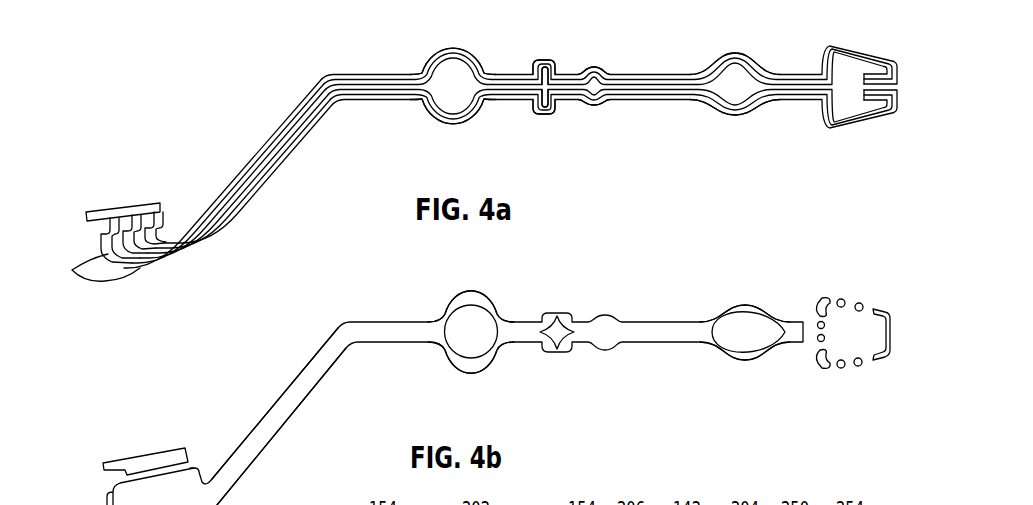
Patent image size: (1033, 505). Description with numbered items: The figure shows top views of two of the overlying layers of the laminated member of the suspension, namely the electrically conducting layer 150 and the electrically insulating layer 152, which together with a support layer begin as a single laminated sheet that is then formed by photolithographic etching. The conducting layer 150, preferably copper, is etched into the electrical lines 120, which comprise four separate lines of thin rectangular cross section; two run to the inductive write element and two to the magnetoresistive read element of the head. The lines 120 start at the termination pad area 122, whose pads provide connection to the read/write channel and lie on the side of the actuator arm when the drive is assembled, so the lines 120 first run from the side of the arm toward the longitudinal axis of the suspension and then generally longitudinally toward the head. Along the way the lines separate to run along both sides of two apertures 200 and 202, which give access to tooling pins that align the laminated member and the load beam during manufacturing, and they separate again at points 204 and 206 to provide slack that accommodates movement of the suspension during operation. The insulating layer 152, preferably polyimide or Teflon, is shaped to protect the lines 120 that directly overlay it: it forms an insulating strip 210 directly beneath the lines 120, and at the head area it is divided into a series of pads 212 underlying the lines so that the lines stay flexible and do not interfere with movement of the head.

In FIG. 4A, the electrical lines 120 is at (570, 73).
In FIG. 4A, the termination pad area 122 is at (87, 268).
In FIG. 4A, the electrically conducting layer 150 is at (652, 73).
In FIG. 4B, the electrically insulating layer 152 is at (660, 325).
In FIG. 4A, the aperture 200 is at (452, 70).
In FIG. 4B, the aperture 200 is at (478, 325).
In FIG. 4A, the aperture 202 is at (740, 73).
In FIG. 4B, the aperture 202 is at (752, 322).
In FIG. 4A, the separation point 204 is at (538, 70).
In FIG. 4A, the separation point 206 is at (590, 82).
In FIG. 4B, the insulating strip 210 is at (307, 362).
In FIG. 4B, the pads 212 is at (897, 283).